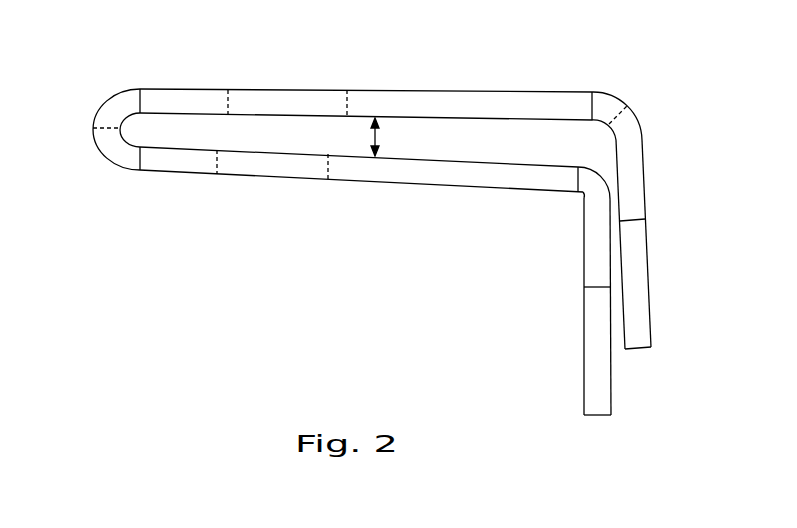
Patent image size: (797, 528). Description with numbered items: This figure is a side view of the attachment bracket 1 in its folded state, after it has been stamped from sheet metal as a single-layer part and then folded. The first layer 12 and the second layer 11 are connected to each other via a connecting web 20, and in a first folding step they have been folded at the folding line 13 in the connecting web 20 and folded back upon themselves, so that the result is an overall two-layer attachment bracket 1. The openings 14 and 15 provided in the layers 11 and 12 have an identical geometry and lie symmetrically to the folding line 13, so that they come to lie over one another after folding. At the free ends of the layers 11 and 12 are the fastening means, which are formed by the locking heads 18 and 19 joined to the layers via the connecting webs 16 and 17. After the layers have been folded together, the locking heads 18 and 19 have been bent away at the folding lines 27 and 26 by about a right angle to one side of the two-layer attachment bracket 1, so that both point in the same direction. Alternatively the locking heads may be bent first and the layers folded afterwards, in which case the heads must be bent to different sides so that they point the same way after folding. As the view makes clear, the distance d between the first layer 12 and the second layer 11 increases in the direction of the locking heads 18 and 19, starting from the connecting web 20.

The attachment bracket 1 is at (318, 269).
The second layer 11 is at (463, 92).
The first layer 12 is at (437, 165).
The folding line 13 is at (95, 130).
The opening 14 is at (292, 97).
The opening 15 is at (281, 163).
The connecting web 16 is at (635, 165).
The connecting web 17 is at (592, 277).
The locking head 18 is at (646, 329).
The locking head 19 is at (595, 408).
The connecting web 20 is at (120, 97).
The folding line 26 is at (592, 192).
The folding line 27 is at (620, 105).
The distance d is at (372, 118).